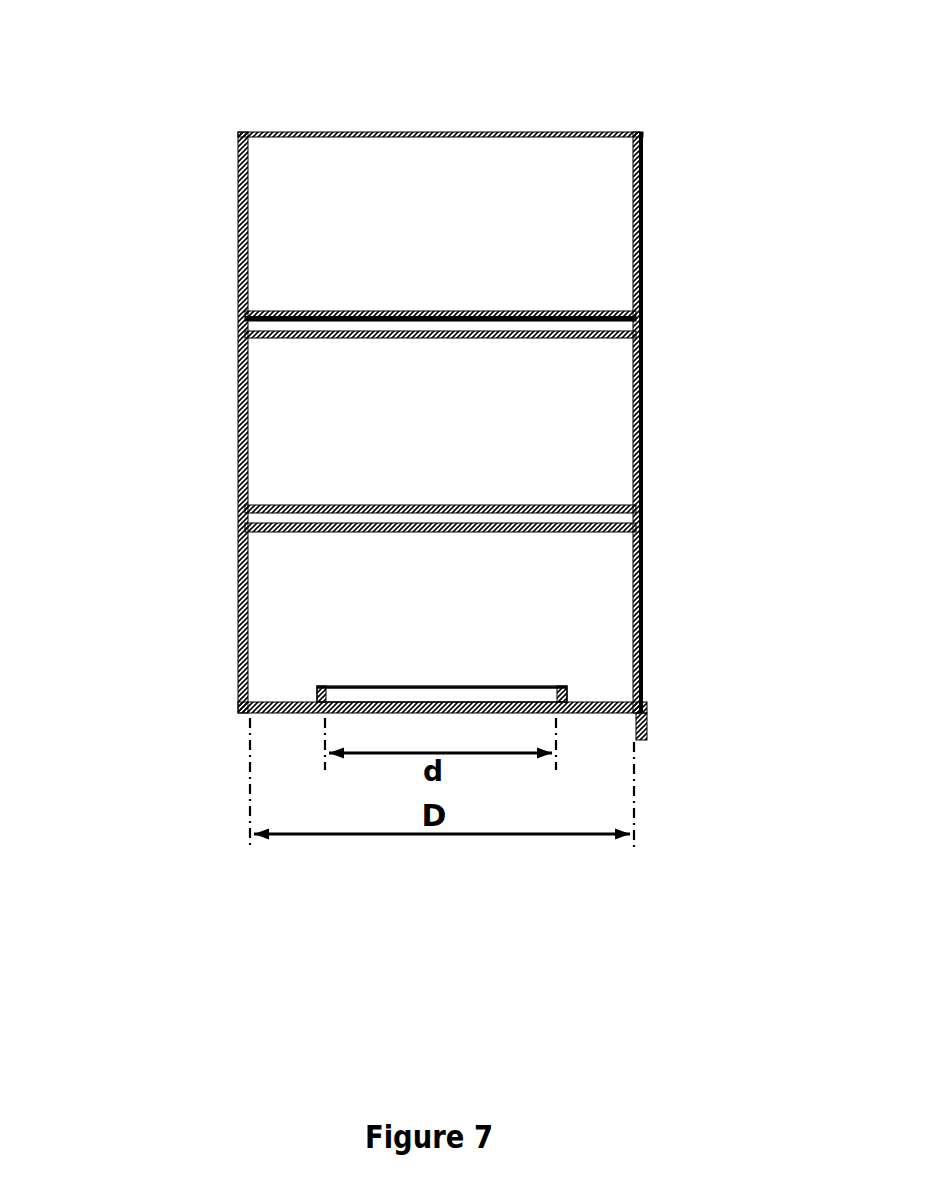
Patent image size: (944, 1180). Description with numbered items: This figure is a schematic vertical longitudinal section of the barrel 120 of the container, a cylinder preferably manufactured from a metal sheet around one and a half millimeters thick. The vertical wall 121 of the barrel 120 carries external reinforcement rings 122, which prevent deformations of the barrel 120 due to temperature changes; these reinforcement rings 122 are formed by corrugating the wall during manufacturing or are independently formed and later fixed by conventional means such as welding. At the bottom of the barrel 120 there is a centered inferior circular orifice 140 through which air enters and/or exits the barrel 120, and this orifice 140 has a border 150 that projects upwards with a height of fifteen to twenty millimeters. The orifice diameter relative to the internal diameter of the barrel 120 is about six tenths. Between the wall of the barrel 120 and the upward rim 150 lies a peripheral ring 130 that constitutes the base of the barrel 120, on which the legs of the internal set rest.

The barrel 120 is at (450, 409).
The side wall 121 is at (647, 191).
The external reinforcement rings 122 is at (238, 322).
The peripheral ring 130 is at (599, 713).
The inferior circular orifice 140 is at (437, 638).
The border 150 is at (567, 692).